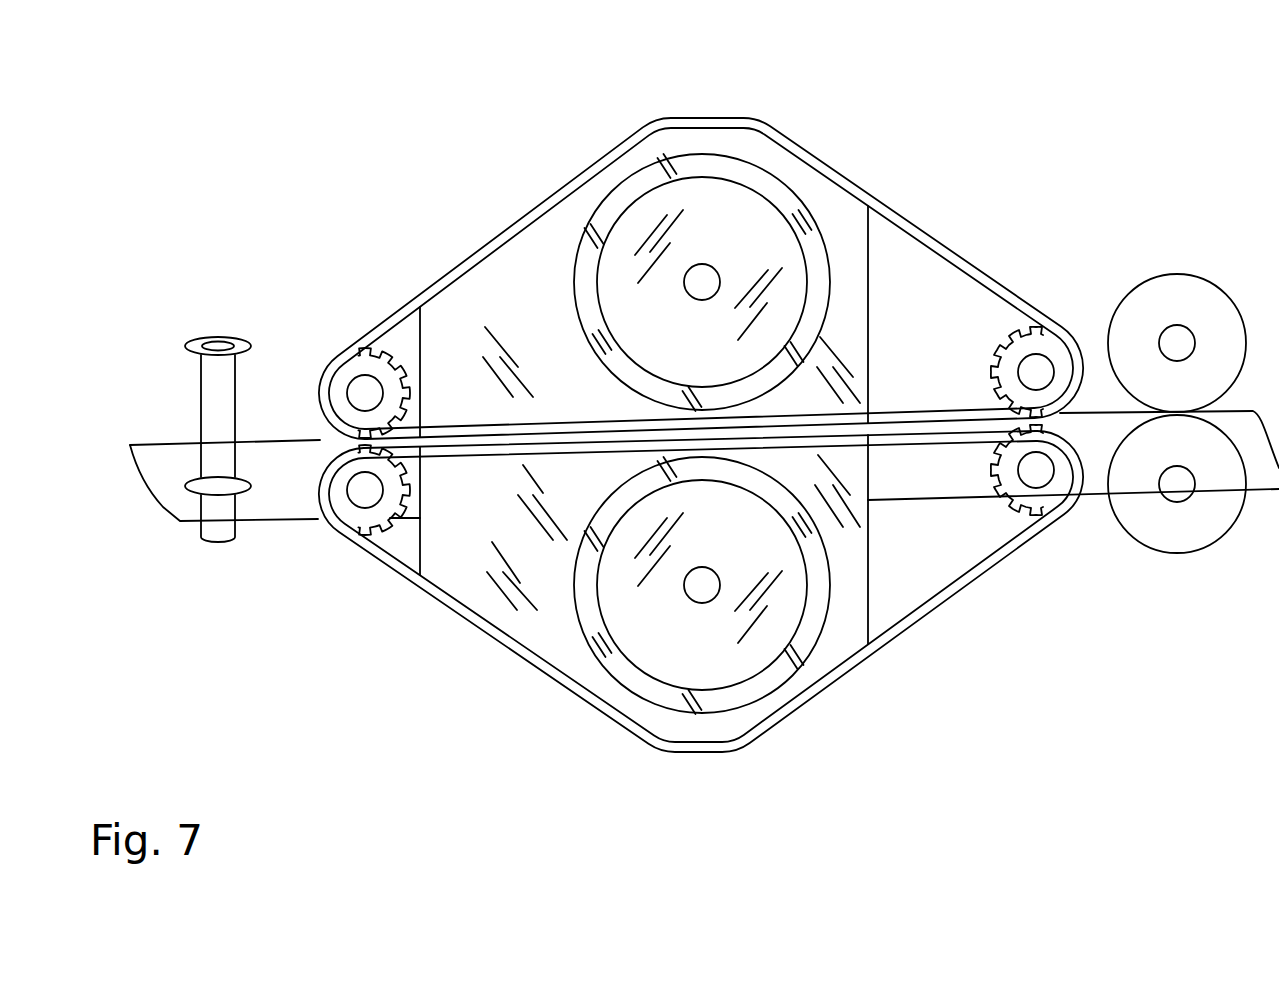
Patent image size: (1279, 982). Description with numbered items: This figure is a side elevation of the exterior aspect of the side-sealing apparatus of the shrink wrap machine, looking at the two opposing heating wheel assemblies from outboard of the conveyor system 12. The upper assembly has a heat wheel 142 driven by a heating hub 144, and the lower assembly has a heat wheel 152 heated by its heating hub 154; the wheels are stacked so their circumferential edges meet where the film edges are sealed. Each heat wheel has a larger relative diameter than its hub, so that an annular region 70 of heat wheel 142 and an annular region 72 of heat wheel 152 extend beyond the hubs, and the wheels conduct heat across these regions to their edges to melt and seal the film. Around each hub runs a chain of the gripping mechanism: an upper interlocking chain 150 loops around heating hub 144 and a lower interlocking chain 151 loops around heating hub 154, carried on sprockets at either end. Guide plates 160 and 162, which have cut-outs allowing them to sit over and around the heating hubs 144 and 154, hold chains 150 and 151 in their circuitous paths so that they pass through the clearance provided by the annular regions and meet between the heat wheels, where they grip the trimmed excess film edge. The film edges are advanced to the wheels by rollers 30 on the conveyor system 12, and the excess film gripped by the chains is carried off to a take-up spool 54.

The conveyor system 12 is at (279, 440).
The rollers 30 is at (1188, 288).
The take-up spool 54 is at (205, 338).
The annular region 70 is at (706, 234).
The annular region 72 is at (682, 636).
The heat wheel 142 is at (748, 165).
The heating hub 144 is at (750, 223).
The interlocking chain 150 is at (490, 237).
The interlocking chain 151 is at (913, 627).
The heat wheel 152 is at (767, 682).
The heating hub 154 is at (663, 668).
The guide plate 160 is at (453, 298).
The guide plate 162 is at (460, 567).